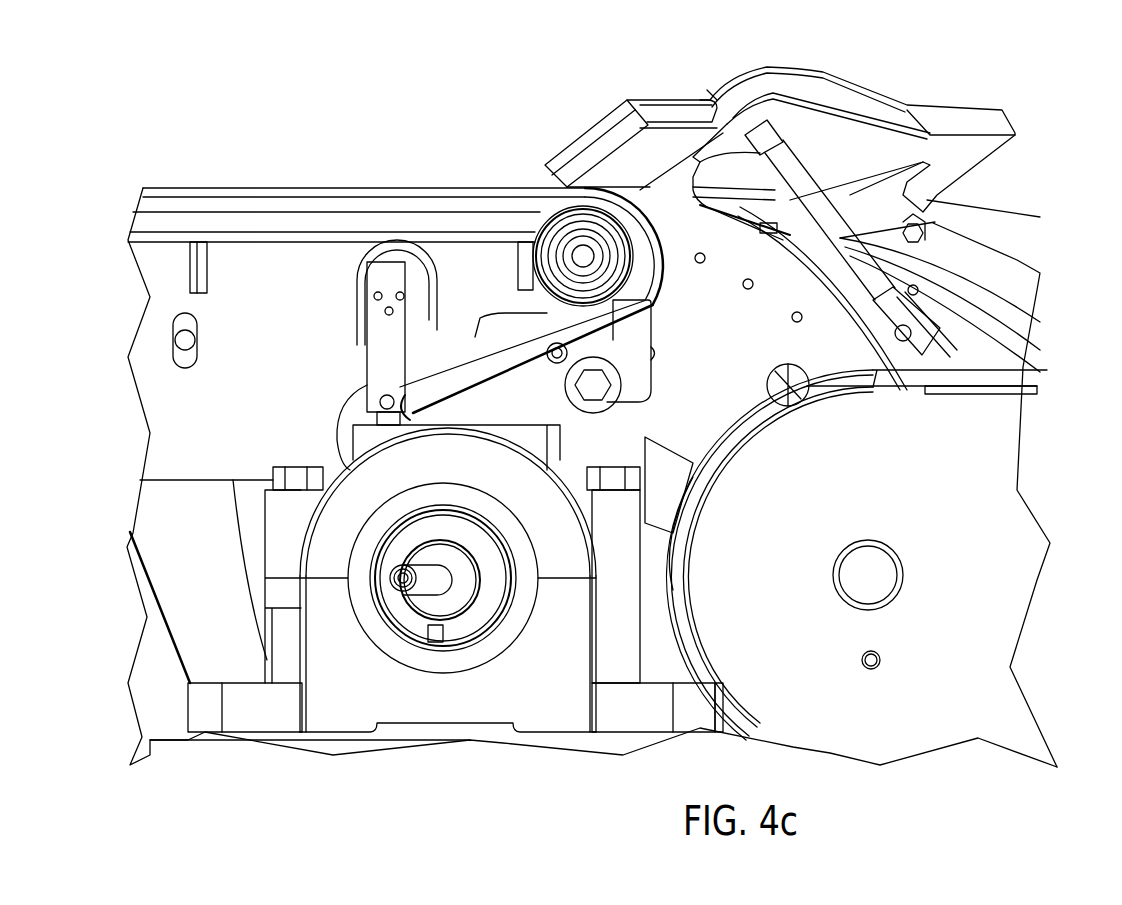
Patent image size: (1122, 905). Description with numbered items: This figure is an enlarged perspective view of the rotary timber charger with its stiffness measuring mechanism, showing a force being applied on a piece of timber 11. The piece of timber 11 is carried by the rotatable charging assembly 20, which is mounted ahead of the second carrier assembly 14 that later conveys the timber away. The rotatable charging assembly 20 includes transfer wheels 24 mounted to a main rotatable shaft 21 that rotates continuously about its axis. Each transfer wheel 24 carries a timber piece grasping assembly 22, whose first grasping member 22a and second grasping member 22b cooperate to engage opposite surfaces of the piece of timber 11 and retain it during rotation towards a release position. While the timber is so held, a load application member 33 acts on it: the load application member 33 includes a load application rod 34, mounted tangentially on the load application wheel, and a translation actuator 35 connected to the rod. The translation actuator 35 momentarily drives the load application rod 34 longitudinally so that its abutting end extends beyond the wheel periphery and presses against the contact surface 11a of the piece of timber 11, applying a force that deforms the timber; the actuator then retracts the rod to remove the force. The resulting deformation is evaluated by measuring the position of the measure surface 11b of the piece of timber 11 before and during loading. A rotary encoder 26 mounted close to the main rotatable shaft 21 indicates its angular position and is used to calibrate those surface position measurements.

The piece of timber 11 is at (796, 83).
The contact surface 11a is at (850, 135).
The measure surface 11b is at (713, 95).
The second carrier assembly 14 is at (167, 170).
The rotatable charging assembly 20 is at (948, 199).
The main rotatable shaft 21 is at (396, 588).
The timber piece grasping assembly 22 is at (512, 170).
The first grasping member 22a is at (682, 173).
The second grasping member 22b is at (545, 177).
The transfer wheel 24 is at (738, 335).
The rotary encoder 26 is at (468, 615).
The load application member 33 is at (957, 283).
The load application rod 34 is at (843, 247).
The translation actuator 35 is at (927, 355).